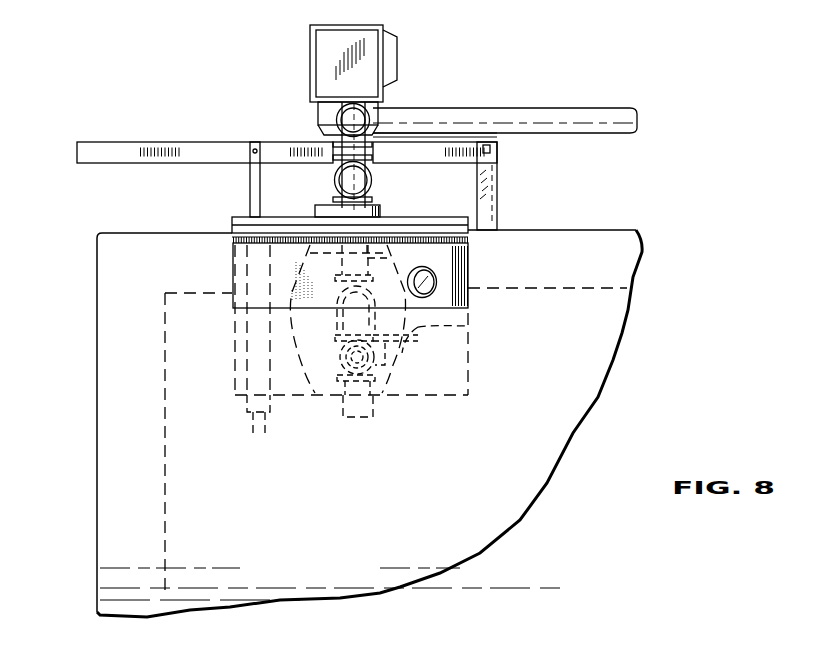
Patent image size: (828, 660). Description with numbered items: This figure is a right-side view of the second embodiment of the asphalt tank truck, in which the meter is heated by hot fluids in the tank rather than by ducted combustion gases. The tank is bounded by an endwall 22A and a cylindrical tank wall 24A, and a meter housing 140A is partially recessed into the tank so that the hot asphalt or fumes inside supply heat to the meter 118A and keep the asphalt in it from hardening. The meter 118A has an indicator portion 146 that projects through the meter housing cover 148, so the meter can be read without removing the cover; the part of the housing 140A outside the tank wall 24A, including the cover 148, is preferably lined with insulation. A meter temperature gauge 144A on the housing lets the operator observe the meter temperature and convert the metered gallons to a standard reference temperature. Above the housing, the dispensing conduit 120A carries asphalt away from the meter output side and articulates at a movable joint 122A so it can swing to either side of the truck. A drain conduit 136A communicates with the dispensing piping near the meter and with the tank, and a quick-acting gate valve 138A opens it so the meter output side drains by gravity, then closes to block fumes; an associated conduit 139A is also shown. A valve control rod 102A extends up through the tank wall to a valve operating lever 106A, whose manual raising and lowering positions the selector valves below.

The endwall 22A is at (97, 333).
The tank wall 24A is at (600, 230).
The valve control rod 102A is at (262, 210).
The valve operating lever 106A is at (190, 142).
The meter 118A is at (298, 388).
The dispensing conduit 120A is at (553, 108).
The movable joint 122A is at (350, 123).
The drain conduit 136A is at (373, 402).
The gate valve 138A is at (393, 353).
The conduit 139A is at (470, 328).
The meter housing 140A is at (235, 296).
The meter temperature gauge 144A is at (430, 278).
The indicator portion 146 is at (388, 33).
The meter housing cover 148 is at (238, 216).